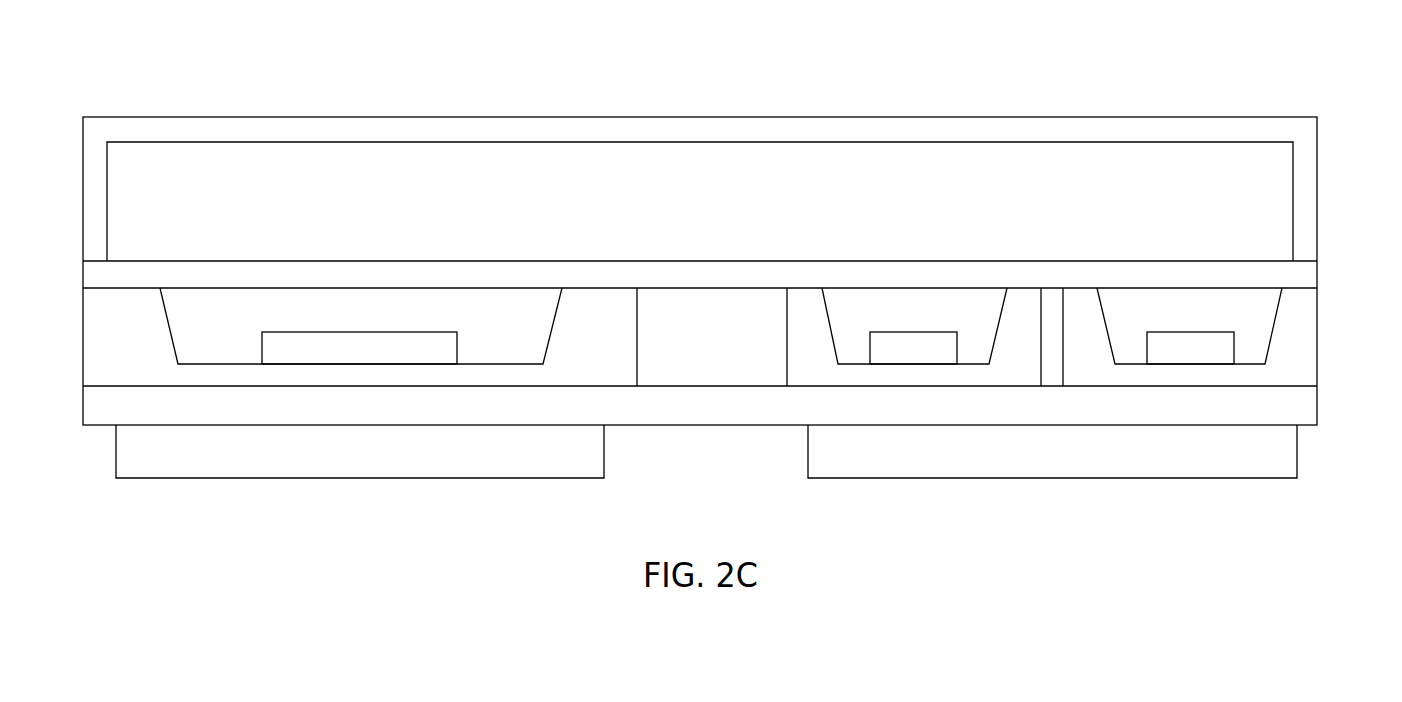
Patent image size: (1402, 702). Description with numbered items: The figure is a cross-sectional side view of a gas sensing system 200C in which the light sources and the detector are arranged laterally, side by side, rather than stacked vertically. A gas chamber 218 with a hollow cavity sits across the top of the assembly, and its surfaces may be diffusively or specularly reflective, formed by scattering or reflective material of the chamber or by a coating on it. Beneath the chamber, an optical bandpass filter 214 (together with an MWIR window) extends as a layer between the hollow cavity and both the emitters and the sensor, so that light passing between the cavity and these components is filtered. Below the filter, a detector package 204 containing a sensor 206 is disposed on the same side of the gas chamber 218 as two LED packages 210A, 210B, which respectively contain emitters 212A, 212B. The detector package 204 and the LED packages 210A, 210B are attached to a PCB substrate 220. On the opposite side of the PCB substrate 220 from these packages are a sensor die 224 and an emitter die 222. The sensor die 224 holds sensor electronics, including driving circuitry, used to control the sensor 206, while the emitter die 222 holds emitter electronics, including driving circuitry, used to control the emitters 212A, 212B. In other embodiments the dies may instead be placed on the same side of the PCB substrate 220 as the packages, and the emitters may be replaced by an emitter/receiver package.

The gas sensing system 200C is at (98, 66).
The gas chamber 218 is at (702, 117).
The optical bandpass filter 214 is at (107, 278).
The detector package 204 is at (107, 340).
The sensor 206 is at (360, 331).
The LED package 210A is at (810, 342).
The emitter 212A is at (913, 331).
The LED package 210B is at (1295, 348).
The emitter 212B is at (1192, 331).
The PCB substrate 220 is at (687, 408).
The sensor die 224 is at (208, 460).
The emitter die 222 is at (1192, 458).